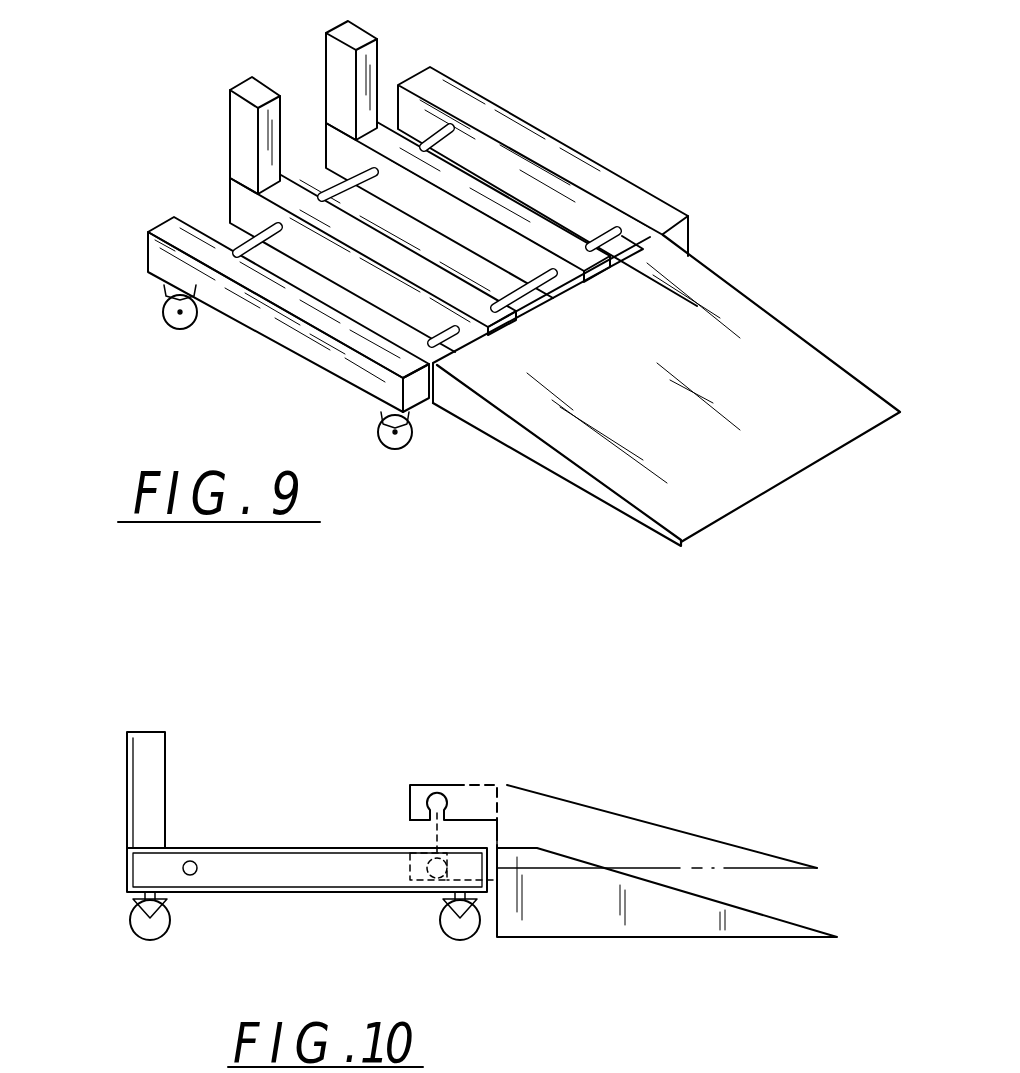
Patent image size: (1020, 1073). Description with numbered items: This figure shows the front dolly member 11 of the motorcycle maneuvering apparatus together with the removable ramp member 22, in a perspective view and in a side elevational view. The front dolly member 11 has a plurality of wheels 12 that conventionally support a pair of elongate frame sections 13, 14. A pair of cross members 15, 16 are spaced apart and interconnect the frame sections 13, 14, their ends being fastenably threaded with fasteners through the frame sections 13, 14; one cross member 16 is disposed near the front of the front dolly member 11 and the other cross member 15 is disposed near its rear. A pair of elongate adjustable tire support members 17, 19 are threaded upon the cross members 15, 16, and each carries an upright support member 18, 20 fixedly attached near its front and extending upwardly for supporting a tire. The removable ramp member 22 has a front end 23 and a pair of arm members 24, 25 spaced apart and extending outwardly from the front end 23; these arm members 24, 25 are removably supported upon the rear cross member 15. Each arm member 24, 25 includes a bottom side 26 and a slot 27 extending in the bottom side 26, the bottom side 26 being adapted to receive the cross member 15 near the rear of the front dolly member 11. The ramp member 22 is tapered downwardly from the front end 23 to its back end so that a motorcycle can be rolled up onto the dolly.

In FIG. 9, the front dolly member 11 is at (563, 66).
In FIG. 9, the wheels 12 is at (165, 328).
In FIG. 10, the wheels 12 is at (143, 938).
In FIG. 9, the elongate frame section 13 is at (255, 310).
In FIG. 10, the elongate frame section 13 is at (238, 877).
In FIG. 9, the elongate frame section 14 is at (580, 163).
In FIG. 9, the cross member 15 is at (437, 392).
In FIG. 9, the cross member 16 is at (230, 228).
In FIG. 9, the adjustable tire support member 17 is at (293, 192).
In FIG. 9, the upright support member 18 is at (247, 128).
In FIG. 10, the upright support member 18 is at (137, 793).
In FIG. 9, the adjustable tire support member 19 is at (498, 197).
In FIG. 9, the upright support member 20 is at (378, 38).
In FIG. 9, the removable ramp member 22 is at (742, 312).
In FIG. 10, the removable ramp member 22 is at (688, 838).
In FIG. 10, the front end 23 is at (407, 788).
In FIG. 9, the arm member 24 is at (400, 345).
In FIG. 9, the arm member 25 is at (627, 223).
In FIG. 10, the bottom side 26 is at (467, 818).
In FIG. 10, the slot 27 is at (427, 818).